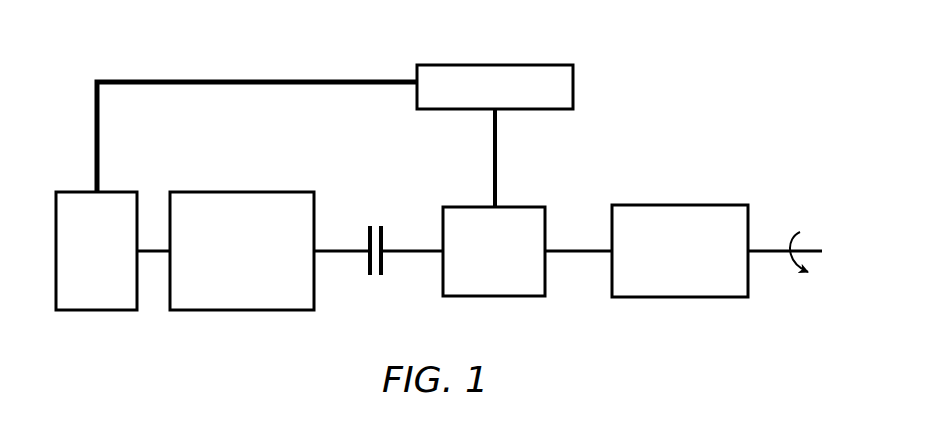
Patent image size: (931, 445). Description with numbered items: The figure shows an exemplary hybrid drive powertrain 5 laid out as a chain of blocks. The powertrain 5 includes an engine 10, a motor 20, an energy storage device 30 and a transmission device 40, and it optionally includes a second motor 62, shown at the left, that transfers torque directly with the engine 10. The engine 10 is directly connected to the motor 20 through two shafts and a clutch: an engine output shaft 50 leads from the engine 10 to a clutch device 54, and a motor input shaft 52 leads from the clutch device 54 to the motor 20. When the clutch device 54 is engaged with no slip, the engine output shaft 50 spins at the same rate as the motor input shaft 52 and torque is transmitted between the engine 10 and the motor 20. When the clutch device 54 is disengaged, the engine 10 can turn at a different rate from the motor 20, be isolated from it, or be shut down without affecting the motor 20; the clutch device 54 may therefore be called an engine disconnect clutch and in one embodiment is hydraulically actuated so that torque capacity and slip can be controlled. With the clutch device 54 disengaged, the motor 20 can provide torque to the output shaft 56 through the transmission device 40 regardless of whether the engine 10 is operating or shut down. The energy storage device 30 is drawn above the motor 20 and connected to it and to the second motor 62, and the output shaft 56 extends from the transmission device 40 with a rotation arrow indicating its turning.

The powertrain 5 is at (117, 57).
The second motor 62 is at (80, 189).
The engine 10 is at (250, 189).
The engine output shaft 50 is at (344, 246).
The clutch device 54 is at (375, 221).
The motor input shaft 52 is at (405, 246).
The motor 20 is at (548, 219).
The energy storage device 30 is at (576, 82).
The transmission device 40 is at (705, 202).
The output shaft 56 is at (761, 246).